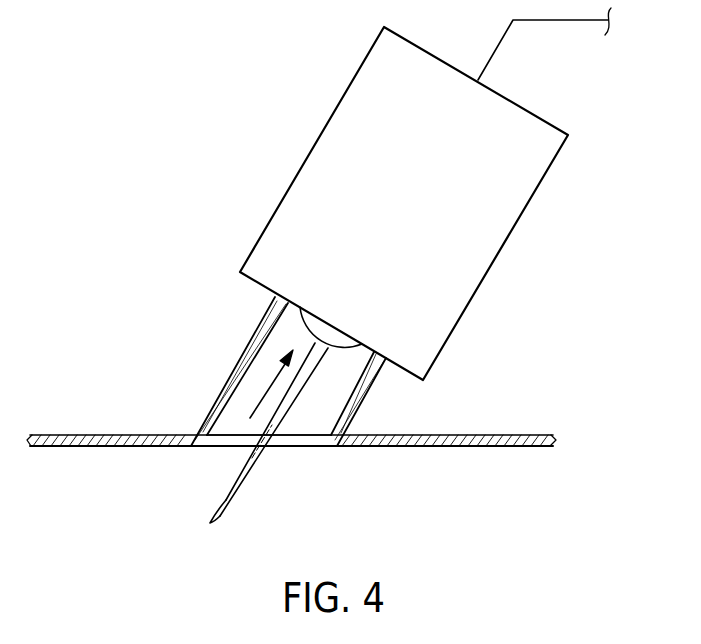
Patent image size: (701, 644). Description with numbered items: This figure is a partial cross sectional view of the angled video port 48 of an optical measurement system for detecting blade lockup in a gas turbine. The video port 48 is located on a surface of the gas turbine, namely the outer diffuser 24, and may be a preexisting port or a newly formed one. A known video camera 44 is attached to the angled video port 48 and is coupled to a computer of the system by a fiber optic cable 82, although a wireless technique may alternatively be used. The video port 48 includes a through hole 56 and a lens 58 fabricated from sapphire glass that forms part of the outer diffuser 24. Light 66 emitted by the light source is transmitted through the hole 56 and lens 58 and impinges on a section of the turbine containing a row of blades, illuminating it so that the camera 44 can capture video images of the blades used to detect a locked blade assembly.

The outer diffuser 24 is at (540, 435).
The video camera 44 is at (272, 154).
The video port 48 is at (232, 373).
The through hole 56 is at (327, 390).
The lens 58 is at (297, 448).
The light 66 is at (227, 502).
The fiber optic cable 82 is at (498, 47).